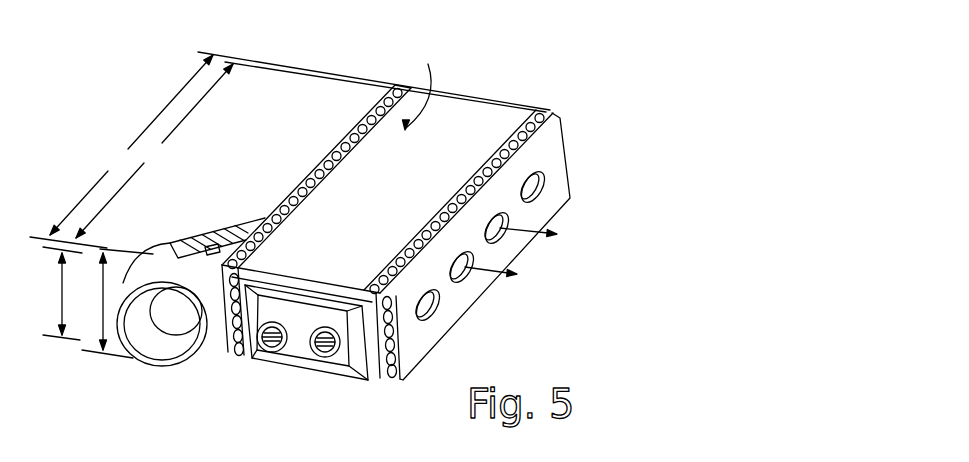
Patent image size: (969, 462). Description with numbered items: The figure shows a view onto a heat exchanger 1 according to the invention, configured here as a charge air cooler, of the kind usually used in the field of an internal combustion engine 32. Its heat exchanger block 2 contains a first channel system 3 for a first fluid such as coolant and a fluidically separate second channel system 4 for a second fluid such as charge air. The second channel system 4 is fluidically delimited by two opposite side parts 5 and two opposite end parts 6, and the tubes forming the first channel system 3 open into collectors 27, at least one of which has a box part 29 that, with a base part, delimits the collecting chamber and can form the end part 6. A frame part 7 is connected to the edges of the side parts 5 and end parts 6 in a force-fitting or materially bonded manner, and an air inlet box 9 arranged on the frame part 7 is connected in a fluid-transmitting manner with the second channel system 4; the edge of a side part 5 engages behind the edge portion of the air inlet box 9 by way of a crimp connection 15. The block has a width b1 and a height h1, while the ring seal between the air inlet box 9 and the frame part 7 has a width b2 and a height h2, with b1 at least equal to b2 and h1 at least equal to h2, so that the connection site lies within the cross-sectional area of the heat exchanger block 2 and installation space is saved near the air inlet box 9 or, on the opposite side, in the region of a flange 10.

The heat exchanger 1 is at (371, 237).
The heat exchanger block 2 is at (421, 84).
The first channel system 3 is at (263, 355).
The second channel system 4 is at (150, 334).
The side part 5 is at (442, 123).
The end part 6 is at (493, 97).
The frame part 7 is at (332, 148).
The air inlet box 9 is at (220, 227).
The flange 10 is at (548, 152).
The crimp connection 15 is at (393, 85).
The collector 27 is at (397, 237).
The box part 29 is at (460, 93).
The internal combustion engine 32 is at (645, 86).
The width of the heat exchanger block b1 is at (121, 151).
The width of the seal b2 is at (138, 158).
The height of the heat exchanger block h1 is at (107, 305).
The height of the seal h2 is at (61, 296).